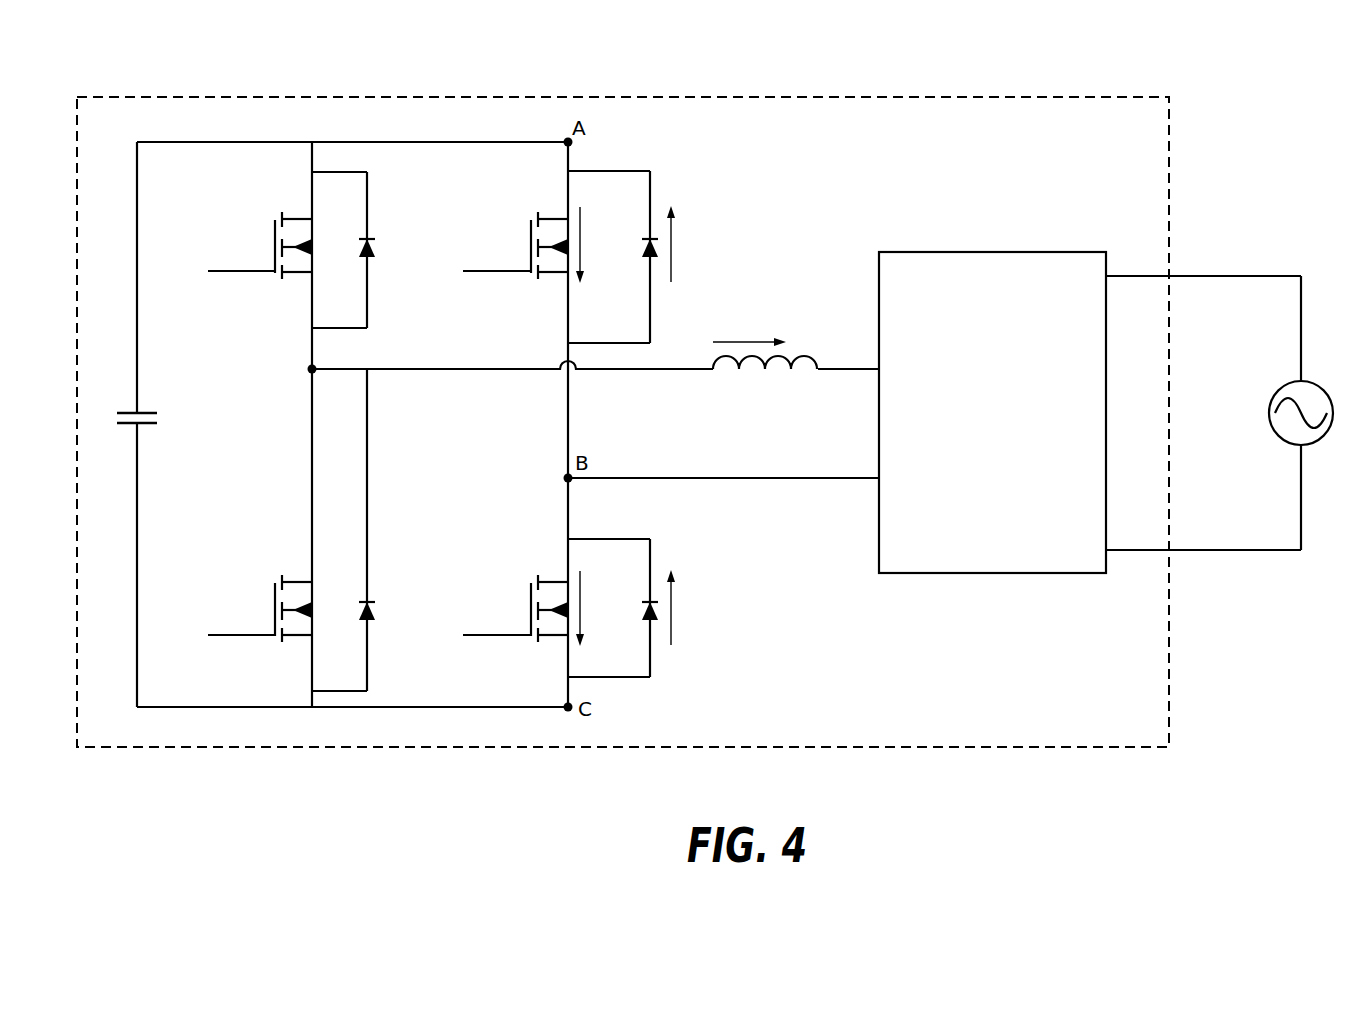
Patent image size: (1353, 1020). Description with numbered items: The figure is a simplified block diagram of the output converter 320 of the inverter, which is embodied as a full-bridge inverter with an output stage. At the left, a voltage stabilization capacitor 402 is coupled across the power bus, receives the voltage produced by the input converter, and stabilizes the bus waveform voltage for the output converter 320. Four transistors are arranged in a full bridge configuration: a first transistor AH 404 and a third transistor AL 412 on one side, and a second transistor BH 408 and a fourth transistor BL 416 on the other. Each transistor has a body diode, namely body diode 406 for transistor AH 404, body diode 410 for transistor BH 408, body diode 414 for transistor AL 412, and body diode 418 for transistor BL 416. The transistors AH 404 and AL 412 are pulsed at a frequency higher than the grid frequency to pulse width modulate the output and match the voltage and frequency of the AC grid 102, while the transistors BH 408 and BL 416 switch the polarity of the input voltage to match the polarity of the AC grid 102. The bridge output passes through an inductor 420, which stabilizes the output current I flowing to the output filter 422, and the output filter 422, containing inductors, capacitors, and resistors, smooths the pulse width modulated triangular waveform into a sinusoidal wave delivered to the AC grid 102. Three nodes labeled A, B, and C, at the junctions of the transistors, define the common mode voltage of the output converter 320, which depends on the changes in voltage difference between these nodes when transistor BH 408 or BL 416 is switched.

The output converter 320 is at (695, 71).
The voltage stabilization capacitor 402 is at (148, 412).
The first transistor AH 404 is at (296, 218).
The body diode 406 is at (370, 239).
The second transistor BH 408 is at (535, 218).
The body diode 410 is at (651, 207).
The third transistor AL 412 is at (296, 580).
The body diode 414 is at (370, 602).
The fourth transistor BL 416 is at (535, 582).
The body diode 418 is at (651, 575).
The inductor 420 is at (800, 355).
The output filter 422 is at (997, 251).
The AC grid 102 is at (1290, 385).